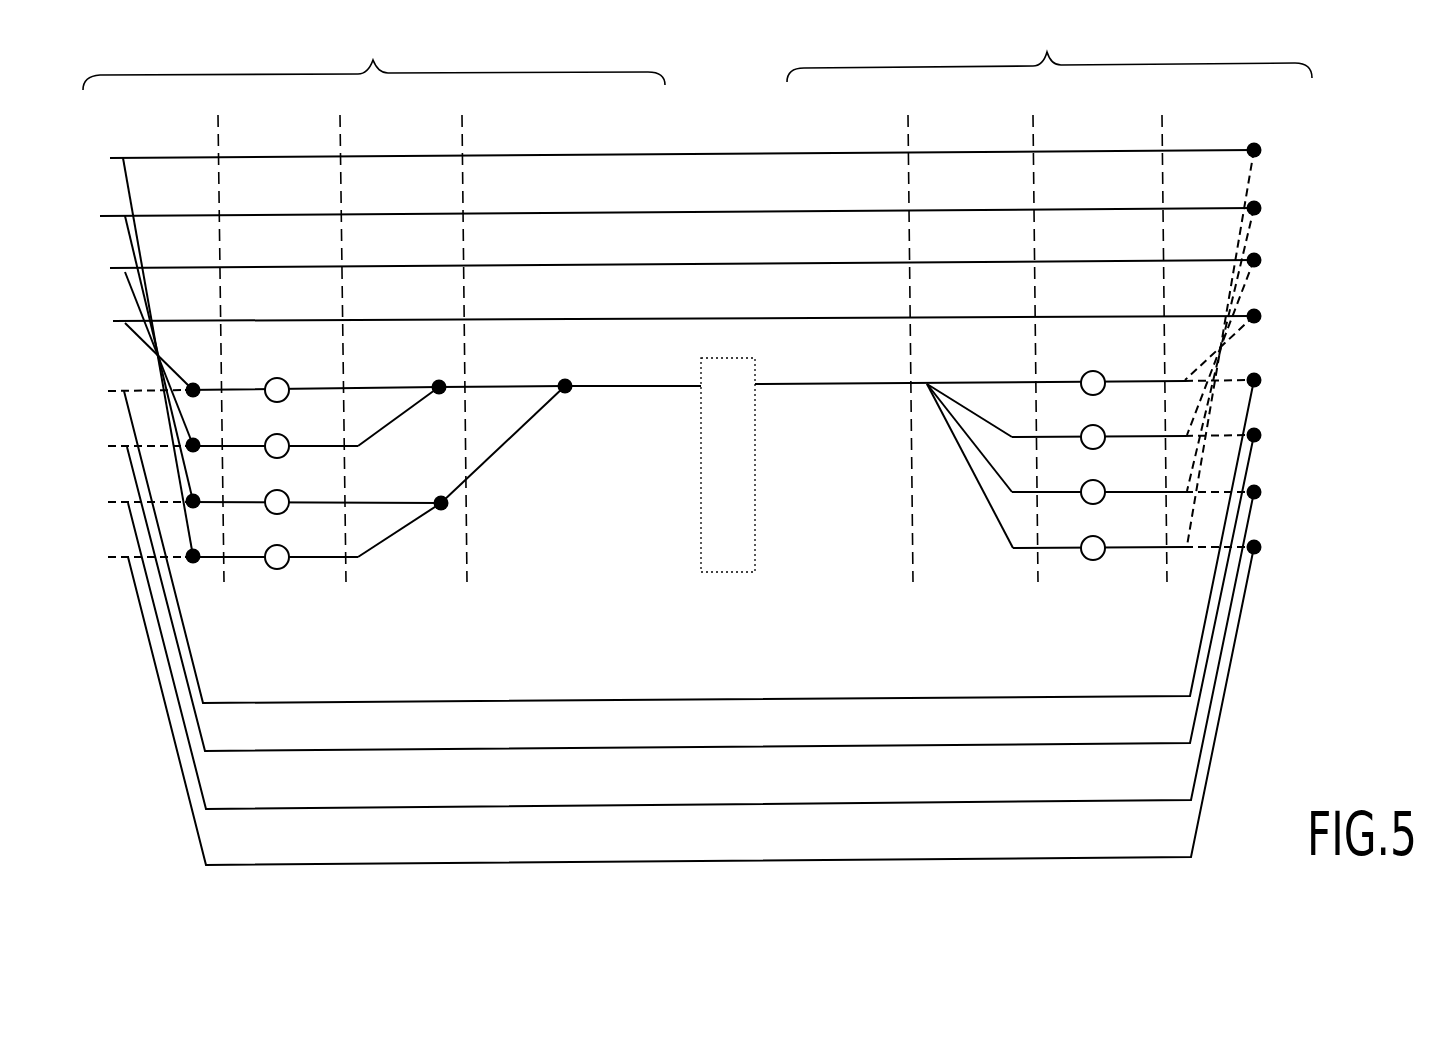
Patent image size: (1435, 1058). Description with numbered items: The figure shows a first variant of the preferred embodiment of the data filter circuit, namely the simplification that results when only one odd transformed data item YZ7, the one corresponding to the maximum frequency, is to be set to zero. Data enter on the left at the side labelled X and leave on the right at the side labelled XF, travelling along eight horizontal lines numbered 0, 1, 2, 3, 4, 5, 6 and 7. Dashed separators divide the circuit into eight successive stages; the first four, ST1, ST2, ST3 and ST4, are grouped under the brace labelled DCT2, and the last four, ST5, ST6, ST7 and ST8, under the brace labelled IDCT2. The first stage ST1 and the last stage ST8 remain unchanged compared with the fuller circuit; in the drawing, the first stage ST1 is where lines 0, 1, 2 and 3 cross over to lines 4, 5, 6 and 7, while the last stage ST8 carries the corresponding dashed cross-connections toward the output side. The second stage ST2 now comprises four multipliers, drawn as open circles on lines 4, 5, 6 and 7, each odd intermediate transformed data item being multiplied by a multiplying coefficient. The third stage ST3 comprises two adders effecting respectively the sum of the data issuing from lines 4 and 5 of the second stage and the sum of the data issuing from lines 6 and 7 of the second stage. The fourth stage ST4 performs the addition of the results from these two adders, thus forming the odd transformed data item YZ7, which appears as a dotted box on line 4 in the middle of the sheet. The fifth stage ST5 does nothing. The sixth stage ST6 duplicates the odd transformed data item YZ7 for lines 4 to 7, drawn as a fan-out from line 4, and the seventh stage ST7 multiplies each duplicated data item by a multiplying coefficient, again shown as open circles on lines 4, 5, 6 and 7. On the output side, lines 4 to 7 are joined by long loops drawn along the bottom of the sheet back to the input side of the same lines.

The input signal vector X is at (132, 329).
The output (filtered) signal vector XF is at (1283, 322).
The first stage ST1 is at (187, 342).
The second stage ST2 is at (305, 342).
The third stage ST3 is at (412, 341).
The fourth stage ST4 is at (507, 300).
The fifth stage ST5 is at (922, 340).
The sixth stage ST6 is at (993, 339).
The seventh stage ST7 is at (1120, 338).
The last stage ST8 is at (1219, 319).
The forward discrete cosine transform block DCT2 is at (374, 55).
The inverse discrete cosine transform block IDCT2 is at (1049, 47).
The odd transformed data item YZ7 is at (728, 465).
The signal line 0 is at (689, 155).
The signal line 1 is at (689, 213).
The signal line 2 is at (689, 265).
The signal line 3 is at (689, 319).
The line 4 is at (689, 386).
The line 5 is at (689, 441).
The line 6 is at (689, 498).
The line 7 is at (689, 553).